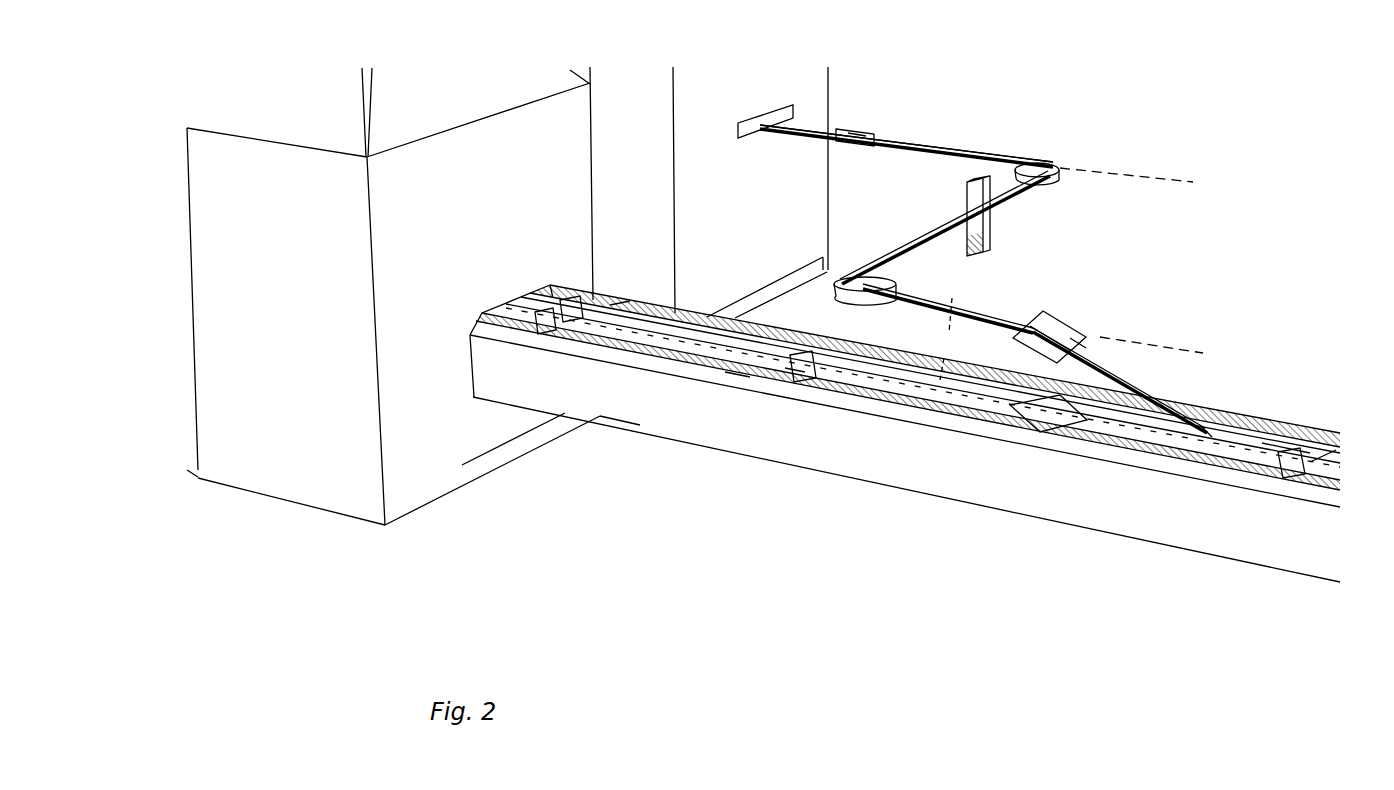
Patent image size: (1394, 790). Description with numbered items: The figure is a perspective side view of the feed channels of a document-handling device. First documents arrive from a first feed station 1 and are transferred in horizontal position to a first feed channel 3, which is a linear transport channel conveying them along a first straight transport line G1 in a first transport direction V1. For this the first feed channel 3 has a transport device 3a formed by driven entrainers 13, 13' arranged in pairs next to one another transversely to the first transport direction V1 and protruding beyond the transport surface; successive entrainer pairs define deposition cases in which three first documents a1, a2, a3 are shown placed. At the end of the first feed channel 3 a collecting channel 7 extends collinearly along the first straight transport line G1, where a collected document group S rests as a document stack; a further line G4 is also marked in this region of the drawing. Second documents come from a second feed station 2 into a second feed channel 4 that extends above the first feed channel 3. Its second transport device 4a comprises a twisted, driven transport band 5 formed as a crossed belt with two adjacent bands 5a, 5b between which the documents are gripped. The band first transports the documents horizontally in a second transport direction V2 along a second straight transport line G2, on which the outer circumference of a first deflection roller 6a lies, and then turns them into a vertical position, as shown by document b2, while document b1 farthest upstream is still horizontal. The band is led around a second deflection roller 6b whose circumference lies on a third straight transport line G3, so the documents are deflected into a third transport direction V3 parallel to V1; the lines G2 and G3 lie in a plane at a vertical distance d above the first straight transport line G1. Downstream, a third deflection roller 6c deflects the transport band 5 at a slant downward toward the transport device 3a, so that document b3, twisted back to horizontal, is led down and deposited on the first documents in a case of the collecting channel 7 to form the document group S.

The first feed station 1 is at (440, 229).
The second feed station 2 is at (766, 202).
The first feed channel 3 is at (931, 448).
The transport device 3a is at (690, 365).
The second feed channel 4 is at (1038, 118).
The second transport device 4a is at (941, 140).
The transport band 5 is at (1020, 198).
The band 5a is at (893, 259).
The band 5b is at (967, 164).
The first deflection roller 6a is at (1047, 160).
The second deflection roller 6b is at (857, 278).
The third deflection roller 6c is at (1050, 311).
The collecting channel 7 is at (1292, 508).
The entrainer 13 is at (684, 303).
The entrainer 13' is at (908, 387).
The first document a1 is at (620, 305).
The first document a2 is at (793, 368).
The first document a3 is at (1037, 418).
The second document b1 is at (860, 130).
The second document b2 is at (988, 243).
The second document b3 is at (1087, 343).
The vertical distance d is at (947, 339).
The first straight transport line G1 is at (870, 393).
The second straight transport line G2 is at (1143, 183).
The third straight transport line G3 is at (1168, 353).
The axis G4 is at (1288, 407).
The document group S is at (1310, 462).
The first transport direction V1 is at (737, 373).
The second transport direction V2 is at (855, 153).
The third transport direction V3 is at (948, 308).